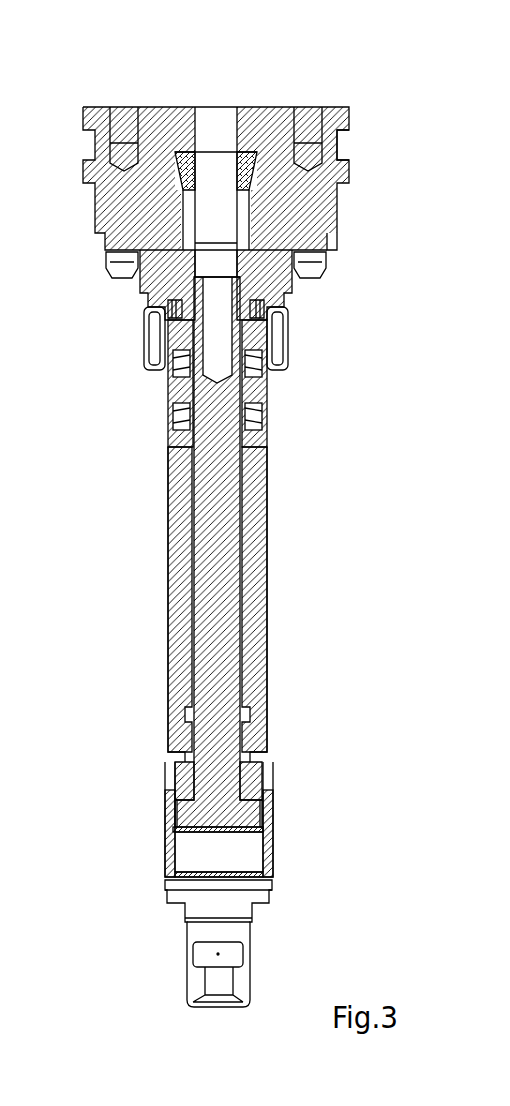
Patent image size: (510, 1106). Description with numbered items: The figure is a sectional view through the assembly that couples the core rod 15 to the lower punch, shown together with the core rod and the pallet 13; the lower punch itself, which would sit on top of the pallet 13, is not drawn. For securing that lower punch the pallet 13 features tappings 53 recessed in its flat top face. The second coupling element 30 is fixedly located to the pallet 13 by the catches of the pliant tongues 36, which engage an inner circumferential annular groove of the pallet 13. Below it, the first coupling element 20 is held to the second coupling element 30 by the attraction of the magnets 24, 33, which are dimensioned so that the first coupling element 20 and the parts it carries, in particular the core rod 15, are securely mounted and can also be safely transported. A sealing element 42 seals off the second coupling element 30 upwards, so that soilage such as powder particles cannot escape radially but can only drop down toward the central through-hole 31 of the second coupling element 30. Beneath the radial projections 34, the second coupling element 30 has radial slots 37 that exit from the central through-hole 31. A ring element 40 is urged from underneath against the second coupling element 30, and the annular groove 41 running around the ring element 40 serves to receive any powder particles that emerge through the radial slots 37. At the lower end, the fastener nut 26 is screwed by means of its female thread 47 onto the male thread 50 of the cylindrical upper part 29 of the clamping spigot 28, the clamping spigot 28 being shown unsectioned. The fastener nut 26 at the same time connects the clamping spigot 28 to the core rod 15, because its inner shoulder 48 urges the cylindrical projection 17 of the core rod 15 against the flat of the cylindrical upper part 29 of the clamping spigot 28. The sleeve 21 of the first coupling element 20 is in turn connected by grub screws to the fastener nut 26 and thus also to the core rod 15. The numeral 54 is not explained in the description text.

The pallet 13 is at (349, 195).
The core rod 15 is at (232, 597).
The cylindrical projection 17 is at (190, 810).
The first coupling element 20 is at (307, 485).
The sleeve 21 is at (268, 545).
The magnet 24 is at (180, 418).
The fastener nut 26 is at (265, 867).
The clamping spigot 28 is at (262, 967).
The cylindrical upper part 29 is at (190, 860).
The second coupling element 30 is at (280, 295).
The central through-hole 31 is at (216, 232).
The magnet 33 is at (170, 383).
The radial projection 34 is at (130, 263).
The pliant tongue 36 is at (165, 202).
The radial slot 37 is at (168, 309).
The ring element 40 is at (290, 329).
The annular groove 41 is at (157, 342).
The sealing element 42 is at (178, 168).
The female thread 47 is at (177, 845).
The inner shoulder 48 is at (250, 808).
The male thread 50 is at (261, 861).
The tapping 53 is at (122, 104).
The flange 54 is at (351, 147).